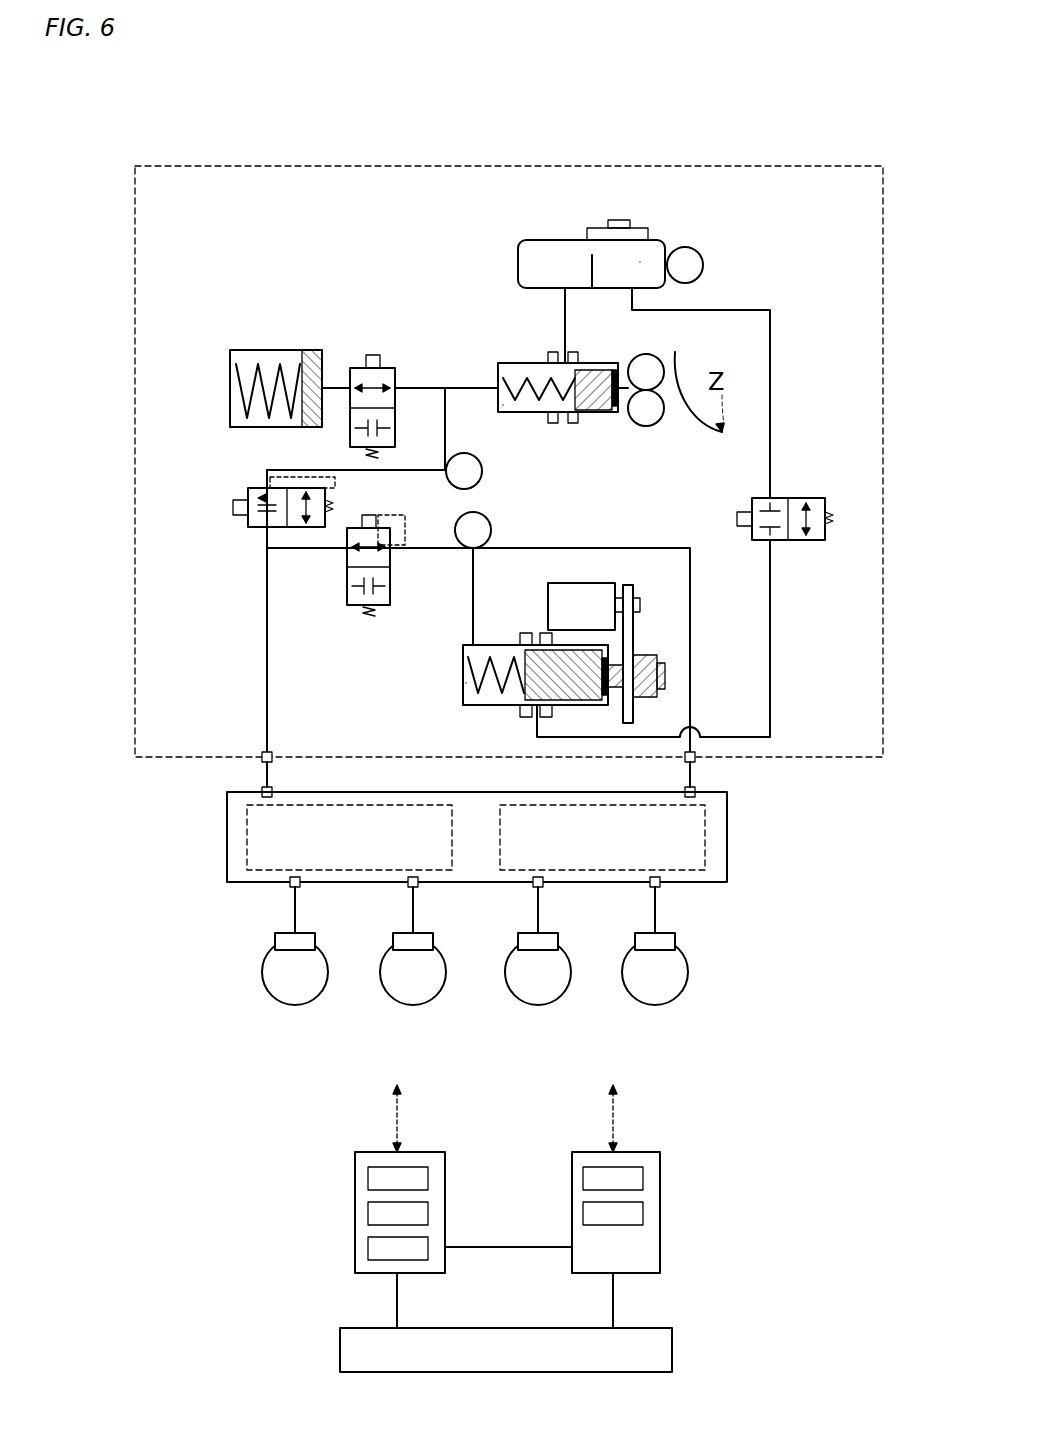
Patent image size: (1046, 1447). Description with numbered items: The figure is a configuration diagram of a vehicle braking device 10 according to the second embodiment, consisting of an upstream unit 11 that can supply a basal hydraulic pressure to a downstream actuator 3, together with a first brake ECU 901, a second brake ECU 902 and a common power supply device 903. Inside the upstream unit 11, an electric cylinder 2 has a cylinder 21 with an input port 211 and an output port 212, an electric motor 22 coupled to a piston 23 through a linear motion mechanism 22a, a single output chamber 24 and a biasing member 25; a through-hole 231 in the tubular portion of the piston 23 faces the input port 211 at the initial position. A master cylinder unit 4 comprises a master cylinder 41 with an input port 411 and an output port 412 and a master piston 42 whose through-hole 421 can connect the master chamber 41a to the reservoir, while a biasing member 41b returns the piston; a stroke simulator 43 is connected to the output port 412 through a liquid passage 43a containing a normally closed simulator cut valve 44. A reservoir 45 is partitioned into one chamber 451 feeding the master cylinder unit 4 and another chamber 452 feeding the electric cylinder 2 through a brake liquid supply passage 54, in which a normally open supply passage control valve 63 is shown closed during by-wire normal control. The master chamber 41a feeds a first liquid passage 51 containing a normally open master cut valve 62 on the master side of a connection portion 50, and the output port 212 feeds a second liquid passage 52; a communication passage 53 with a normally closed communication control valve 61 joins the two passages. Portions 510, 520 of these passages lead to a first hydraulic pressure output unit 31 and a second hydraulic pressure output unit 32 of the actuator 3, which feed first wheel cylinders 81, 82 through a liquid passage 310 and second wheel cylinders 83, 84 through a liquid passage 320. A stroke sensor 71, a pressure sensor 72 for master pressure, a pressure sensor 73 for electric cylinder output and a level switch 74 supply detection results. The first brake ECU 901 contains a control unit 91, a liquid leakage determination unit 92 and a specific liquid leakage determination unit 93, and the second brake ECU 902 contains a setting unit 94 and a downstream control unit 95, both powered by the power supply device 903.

The vehicle braking device 10 is at (148, 115).
The upstream unit 11 is at (290, 165).
The electric cylinder 2 is at (382, 660).
The cylinder 21 is at (485, 708).
The input port 211 is at (532, 714).
The output port 212 is at (470, 648).
The electric motor 22 is at (590, 585).
The linear motion mechanism 22a is at (632, 635).
The piston 23 is at (572, 702).
The through-hole 231 is at (480, 700).
The output chamber 24 is at (466, 685).
The biasing member 25 is at (470, 658).
The actuator 3 is at (240, 795).
The first hydraulic pressure output unit 31 is at (245, 835).
The second hydraulic pressure output unit 32 is at (710, 835).
The liquid passage 310 is at (410, 910).
The liquid passage 320 is at (652, 908).
The master cylinder unit 4 is at (498, 343).
The master cylinder 41 is at (518, 402).
The master chamber 41a is at (505, 398).
The biasing member 41b is at (555, 412).
The input port 411 is at (573, 362).
The output port 412 is at (500, 384).
The master piston 42 is at (598, 404).
The through-hole 421 is at (543, 370).
The stroke simulator 43 is at (262, 350).
The liquid passage 43a is at (445, 388).
The simulator cut valve 44 is at (370, 355).
The reservoir 45 is at (520, 250).
The chamber 451 is at (548, 265).
The chamber 452 is at (640, 262).
The connection portion 50 is at (267, 548).
The first liquid passage 51 is at (372, 470).
The second liquid passage 52 is at (470, 583).
The communication passage 53 is at (325, 550).
The brake liquid supply passage 54 is at (772, 462).
The communication control valve 61 is at (345, 580).
The master cut valve 62 is at (248, 490).
The supply passage control valve 63 is at (812, 498).
The stroke sensor 71 is at (646, 355).
The pressure sensor 72 is at (482, 473).
The pressure sensor 73 is at (492, 530).
The level switch 74 is at (704, 266).
The first wheel cylinder 81 is at (278, 940).
The first wheel cylinder 82 is at (396, 940).
The second wheel cylinder 83 is at (522, 940).
The second wheel cylinder 84 is at (640, 940).
The first brake ECU 901 is at (355, 1152).
The control unit 91 is at (375, 1178).
The liquid leakage determination unit 92 is at (375, 1212).
The specific liquid leakage determination unit 93 is at (375, 1248).
The second brake ECU 902 is at (572, 1152).
The setting unit 94 is at (590, 1178).
The downstream control unit 95 is at (590, 1212).
The power supply device 903 is at (350, 1350).
The portion 510 is at (280, 781).
The portion 520 is at (685, 783).